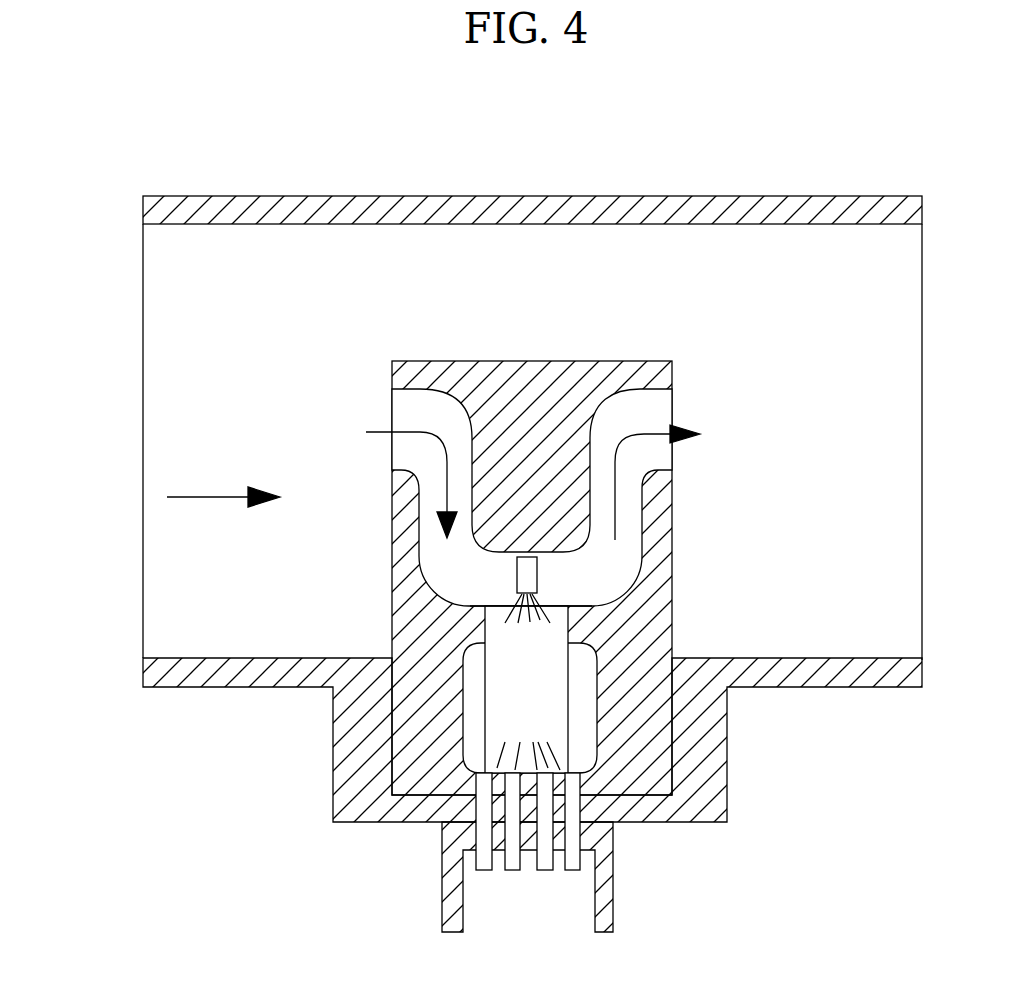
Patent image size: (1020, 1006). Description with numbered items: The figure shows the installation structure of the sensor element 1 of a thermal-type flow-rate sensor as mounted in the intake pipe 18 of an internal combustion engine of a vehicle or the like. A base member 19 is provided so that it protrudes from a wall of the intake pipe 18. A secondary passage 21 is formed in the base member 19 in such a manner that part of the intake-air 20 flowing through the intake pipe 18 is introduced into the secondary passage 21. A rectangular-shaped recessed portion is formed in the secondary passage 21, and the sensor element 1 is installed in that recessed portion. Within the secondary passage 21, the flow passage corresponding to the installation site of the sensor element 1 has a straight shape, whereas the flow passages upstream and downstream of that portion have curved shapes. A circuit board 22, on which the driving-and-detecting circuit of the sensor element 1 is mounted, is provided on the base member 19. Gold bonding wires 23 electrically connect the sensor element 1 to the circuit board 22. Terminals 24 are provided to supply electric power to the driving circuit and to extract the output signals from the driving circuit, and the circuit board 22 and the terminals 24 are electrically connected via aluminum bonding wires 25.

The sensor element 1 is at (537, 572).
The intake pipe 18 is at (187, 607).
The base member 19 is at (412, 641).
The intake-air 20 is at (203, 497).
The secondary passage 21 is at (440, 420).
The circuit board 22 is at (558, 688).
The gold bonding wires 23 is at (580, 612).
The terminals 24 is at (517, 863).
The aluminum bonding wires 25 is at (500, 750).